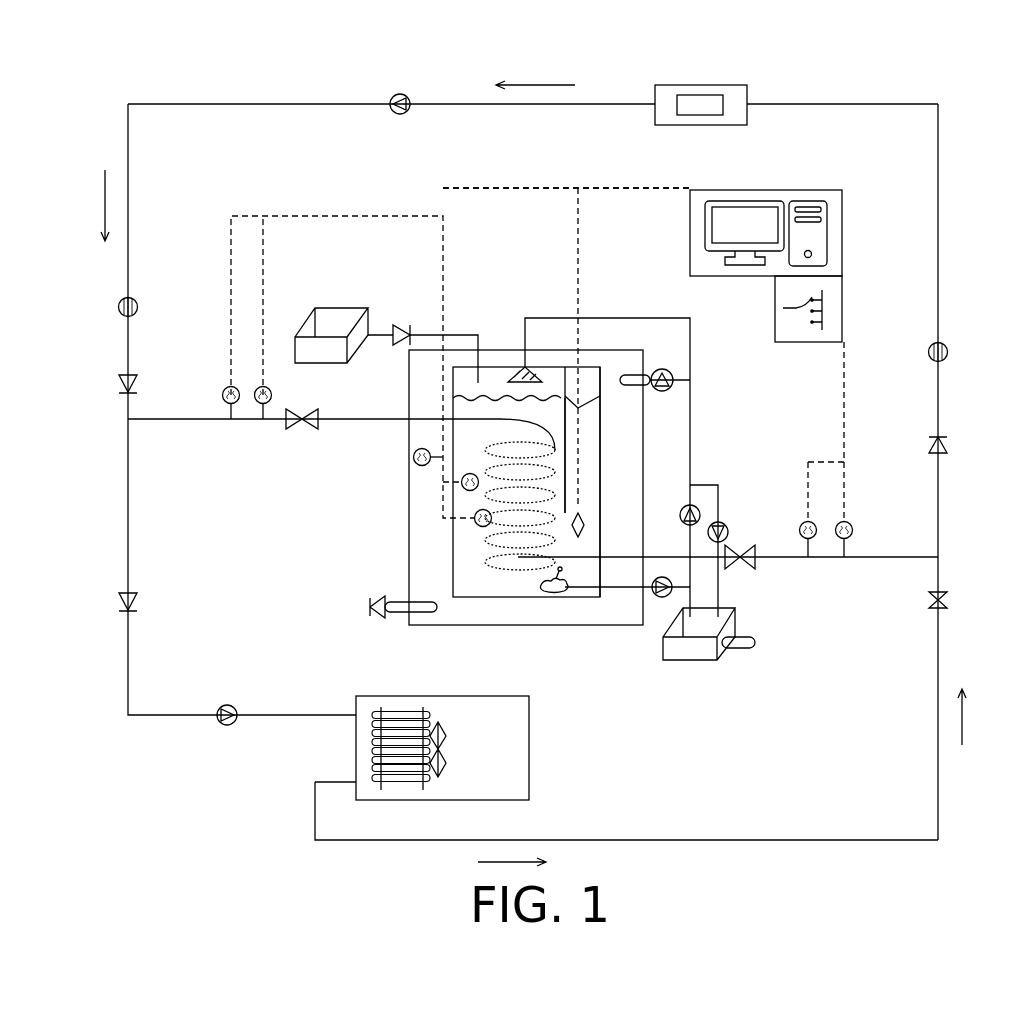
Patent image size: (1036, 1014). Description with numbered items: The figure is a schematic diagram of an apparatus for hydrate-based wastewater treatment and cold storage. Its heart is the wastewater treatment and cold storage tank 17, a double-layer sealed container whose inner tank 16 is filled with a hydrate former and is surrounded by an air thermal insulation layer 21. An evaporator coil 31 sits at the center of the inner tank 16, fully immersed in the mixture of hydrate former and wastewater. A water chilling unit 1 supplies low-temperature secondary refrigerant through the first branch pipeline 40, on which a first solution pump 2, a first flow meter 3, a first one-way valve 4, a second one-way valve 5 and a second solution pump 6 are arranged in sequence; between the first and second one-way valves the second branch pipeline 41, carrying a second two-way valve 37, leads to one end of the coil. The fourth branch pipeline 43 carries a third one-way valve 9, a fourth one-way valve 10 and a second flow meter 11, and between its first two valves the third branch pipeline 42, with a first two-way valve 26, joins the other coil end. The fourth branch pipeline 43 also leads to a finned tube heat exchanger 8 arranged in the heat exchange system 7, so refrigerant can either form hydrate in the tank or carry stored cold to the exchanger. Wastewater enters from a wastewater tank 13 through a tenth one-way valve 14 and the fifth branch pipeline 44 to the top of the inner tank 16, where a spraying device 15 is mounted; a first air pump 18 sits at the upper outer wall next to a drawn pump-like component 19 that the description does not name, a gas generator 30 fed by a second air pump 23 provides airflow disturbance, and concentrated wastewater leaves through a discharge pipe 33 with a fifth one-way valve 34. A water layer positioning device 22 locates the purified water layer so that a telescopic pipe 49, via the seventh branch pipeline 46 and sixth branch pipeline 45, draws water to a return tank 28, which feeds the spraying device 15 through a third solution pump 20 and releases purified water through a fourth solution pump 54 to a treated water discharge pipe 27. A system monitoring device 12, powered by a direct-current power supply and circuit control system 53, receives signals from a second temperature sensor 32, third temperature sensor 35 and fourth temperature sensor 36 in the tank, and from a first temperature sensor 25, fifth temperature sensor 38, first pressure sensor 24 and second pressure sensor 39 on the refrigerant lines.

The water chilling unit 1 is at (693, 85).
The first solution pump 2 is at (394, 95).
The first flow meter 3 is at (117, 303).
The first one-way valve 4 is at (117, 380).
The second one-way valve 5 is at (117, 600).
The second solution pump 6 is at (217, 722).
The heat exchange system 7 is at (353, 728).
The finned tube heat exchanger 8 is at (381, 752).
The third one-way valve 9 is at (950, 592).
The fourth one-way valve 10 is at (948, 440).
The second flow meter 11 is at (950, 345).
The system monitoring device 12 is at (833, 190).
The wastewater tank 13 is at (338, 308).
The tenth one-way valve 14 is at (405, 328).
The spraying device 15 is at (514, 367).
The inner tank 16 is at (563, 365).
The wastewater treatment and cold storage tank 17 is at (607, 350).
The first air pump 18 is at (655, 374).
The pump 19 is at (672, 372).
The third solution pump 20 is at (703, 507).
The air thermal insulation layer 21 is at (623, 440).
The water layer positioning device 22 is at (586, 521).
The second air pump 23 is at (658, 592).
The first pressure sensor 24 is at (848, 538).
The first temperature sensor 25 is at (813, 538).
The first two-way valve 26 is at (755, 567).
The treated water discharge pipe 27 is at (737, 650).
The return tank 28 is at (687, 647).
The gas generator 30 is at (548, 590).
The evaporator coil 31 is at (517, 527).
The second temperature sensor 32 is at (483, 526).
The concentrated wastewater discharge pipe 33 is at (400, 615).
The fifth one-way valve 34 is at (380, 613).
The third temperature sensor 35 is at (462, 488).
The fourth temperature sensor 36 is at (415, 465).
The second two-way valve 37 is at (290, 425).
The fifth temperature sensor 38 is at (258, 405).
The second pressure sensor 39 is at (225, 405).
The first branch pipeline 40 is at (272, 104).
The second branch pipeline 41 is at (337, 425).
The third branch pipeline 42 is at (787, 557).
The fourth branch pipeline 43 is at (877, 104).
The fifth branch pipeline 44 is at (437, 333).
The sixth branch pipeline 45 is at (580, 507).
The seventh branch pipeline 46 is at (566, 333).
The telescopic pipe 49 is at (567, 510).
The direct-current power supply and circuit control system 53 is at (843, 307).
The fourth solution pump 54 is at (730, 530).